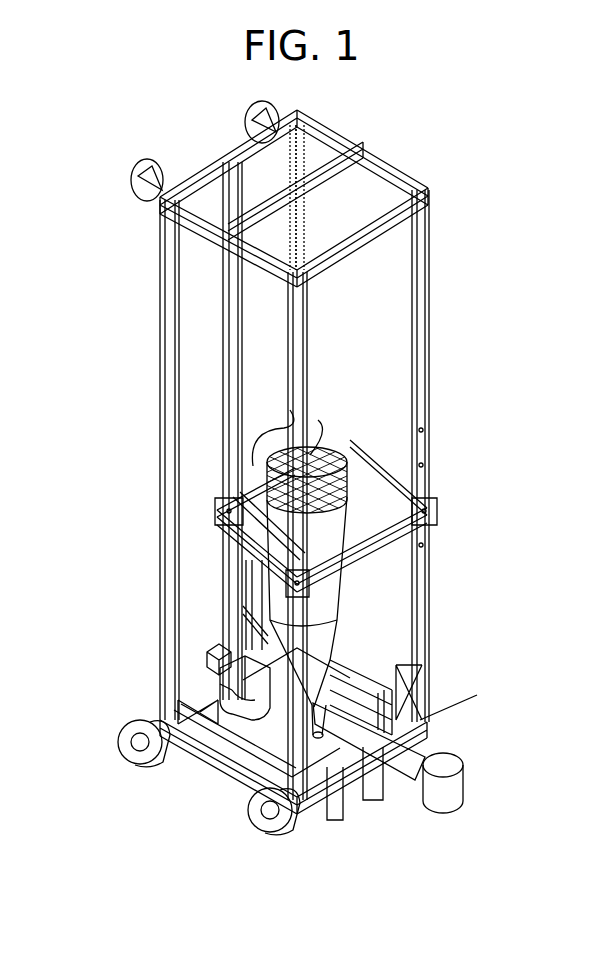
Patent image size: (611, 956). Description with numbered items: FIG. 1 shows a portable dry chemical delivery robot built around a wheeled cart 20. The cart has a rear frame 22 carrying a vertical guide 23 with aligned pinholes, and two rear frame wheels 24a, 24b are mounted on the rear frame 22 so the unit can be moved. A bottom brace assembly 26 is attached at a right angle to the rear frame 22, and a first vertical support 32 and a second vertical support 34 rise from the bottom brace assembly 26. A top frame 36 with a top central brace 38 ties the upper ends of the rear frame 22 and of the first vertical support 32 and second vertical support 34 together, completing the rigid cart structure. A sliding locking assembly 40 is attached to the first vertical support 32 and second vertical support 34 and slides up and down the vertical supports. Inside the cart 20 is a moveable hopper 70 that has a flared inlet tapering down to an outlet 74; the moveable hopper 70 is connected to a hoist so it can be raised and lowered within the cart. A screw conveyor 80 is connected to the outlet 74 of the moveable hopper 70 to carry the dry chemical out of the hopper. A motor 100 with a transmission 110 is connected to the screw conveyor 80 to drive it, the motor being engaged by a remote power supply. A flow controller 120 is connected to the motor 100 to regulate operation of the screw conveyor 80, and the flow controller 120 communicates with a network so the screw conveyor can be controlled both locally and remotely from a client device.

The cart 20 is at (455, 298).
The rear frame 22 is at (157, 447).
The vertical guide 23 is at (225, 295).
The rear frame wheel 24a is at (150, 178).
The rear frame wheel 24b is at (255, 122).
The bottom brace assembly 26 is at (241, 778).
The first vertical support 32 is at (285, 382).
The second vertical support 34 is at (428, 375).
The top frame 36 is at (397, 170).
The top central brace 38 is at (367, 140).
The sliding locking assembly 40 is at (365, 545).
The moveable hopper 70 is at (335, 628).
The outlet 74 is at (320, 708).
The screw conveyor 80 is at (413, 753).
The motor 100 is at (206, 684).
The transmission 110 is at (233, 690).
The flow controller 120 is at (268, 630).